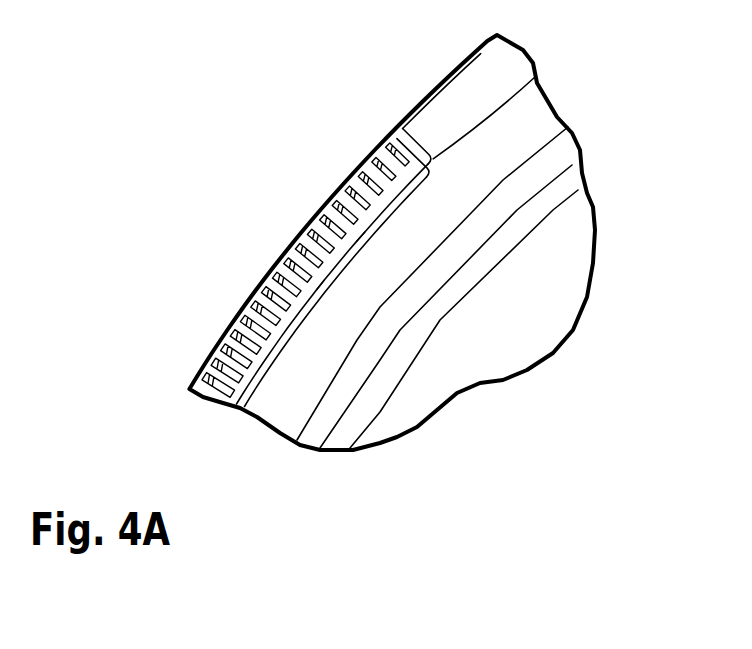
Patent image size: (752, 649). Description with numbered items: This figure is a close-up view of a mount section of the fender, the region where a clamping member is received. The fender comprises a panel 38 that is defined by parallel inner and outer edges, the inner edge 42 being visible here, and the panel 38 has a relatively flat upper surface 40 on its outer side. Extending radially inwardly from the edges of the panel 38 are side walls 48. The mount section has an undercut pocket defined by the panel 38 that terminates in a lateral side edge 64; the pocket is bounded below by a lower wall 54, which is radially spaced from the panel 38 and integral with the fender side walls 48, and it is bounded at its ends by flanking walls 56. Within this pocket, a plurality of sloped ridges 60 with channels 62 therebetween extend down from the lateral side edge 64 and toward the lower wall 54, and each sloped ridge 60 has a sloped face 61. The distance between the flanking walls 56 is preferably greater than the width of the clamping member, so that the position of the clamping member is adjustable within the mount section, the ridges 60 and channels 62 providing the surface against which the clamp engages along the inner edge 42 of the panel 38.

The panel 38 is at (327, 188).
The upper surface 40 is at (438, 78).
The inner edge 42 is at (479, 45).
The side walls 48 is at (533, 127).
The lower wall 54 is at (262, 352).
The flanking walls 56 is at (393, 136).
The sloped ridges 60 is at (288, 275).
The sloped face 61 is at (363, 232).
The channels 62 is at (310, 270).
The lateral side edge 64 is at (323, 226).